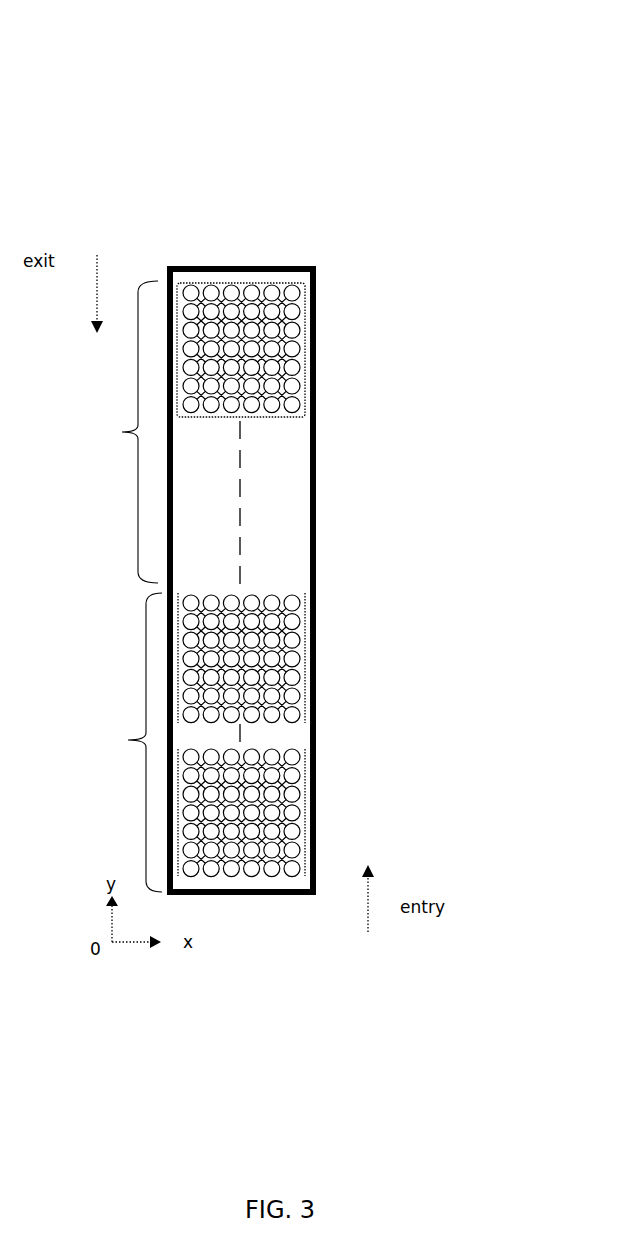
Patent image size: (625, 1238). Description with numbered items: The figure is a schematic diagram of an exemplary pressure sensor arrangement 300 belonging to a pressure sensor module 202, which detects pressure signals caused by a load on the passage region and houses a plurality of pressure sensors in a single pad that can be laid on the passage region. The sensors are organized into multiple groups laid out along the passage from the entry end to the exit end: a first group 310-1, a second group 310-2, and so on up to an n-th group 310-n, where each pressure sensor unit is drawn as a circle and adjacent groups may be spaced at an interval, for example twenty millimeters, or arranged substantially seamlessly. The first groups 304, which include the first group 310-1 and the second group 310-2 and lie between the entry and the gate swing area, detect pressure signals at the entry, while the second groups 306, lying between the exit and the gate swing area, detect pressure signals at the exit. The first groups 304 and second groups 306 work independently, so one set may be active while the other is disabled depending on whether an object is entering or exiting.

The pressure sensor arrangement 300 is at (567, 44).
The pressure sensor module 202 is at (315, 470).
The second groups of pressure sensors 306 is at (219, 386).
The first groups of pressure sensors 304 is at (228, 708).
The n-th group 310-n is at (294, 284).
The second group 310-2 is at (287, 591).
The first group 310-1 is at (299, 750).